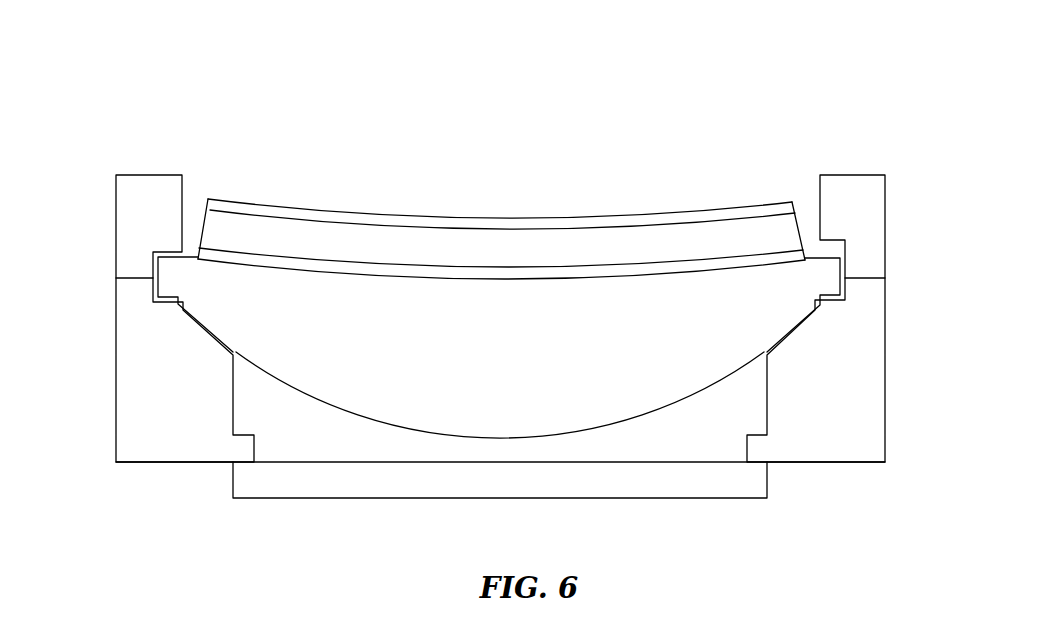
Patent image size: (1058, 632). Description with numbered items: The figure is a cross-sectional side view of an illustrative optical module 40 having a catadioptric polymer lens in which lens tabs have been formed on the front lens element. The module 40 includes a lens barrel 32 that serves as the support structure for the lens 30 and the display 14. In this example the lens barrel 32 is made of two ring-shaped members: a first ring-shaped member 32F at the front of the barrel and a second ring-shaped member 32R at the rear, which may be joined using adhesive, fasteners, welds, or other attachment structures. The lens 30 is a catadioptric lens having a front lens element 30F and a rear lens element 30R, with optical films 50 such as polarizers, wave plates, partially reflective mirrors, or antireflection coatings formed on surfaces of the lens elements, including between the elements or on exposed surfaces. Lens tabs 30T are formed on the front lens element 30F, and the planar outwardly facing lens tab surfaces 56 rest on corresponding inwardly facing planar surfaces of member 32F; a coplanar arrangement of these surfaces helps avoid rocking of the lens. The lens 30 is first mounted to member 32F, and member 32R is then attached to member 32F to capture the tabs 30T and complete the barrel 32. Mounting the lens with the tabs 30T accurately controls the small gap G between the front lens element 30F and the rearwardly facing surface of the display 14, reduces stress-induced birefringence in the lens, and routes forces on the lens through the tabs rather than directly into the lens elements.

The optical module 40 is at (705, 53).
The lens 30 is at (436, 286).
The rear lens element 30R is at (593, 238).
The front lens element 30F is at (683, 390).
The lens tabs 30T is at (177, 273).
The optical films 50 is at (737, 265).
The lens barrel 32 is at (537, 321).
The second ring-shaped member 32R is at (864, 190).
The first ring-shaped member 32F is at (500, 480).
The lens tab surfaces 56 is at (172, 298).
The display 14 is at (498, 483).
The gap G is at (457, 437).